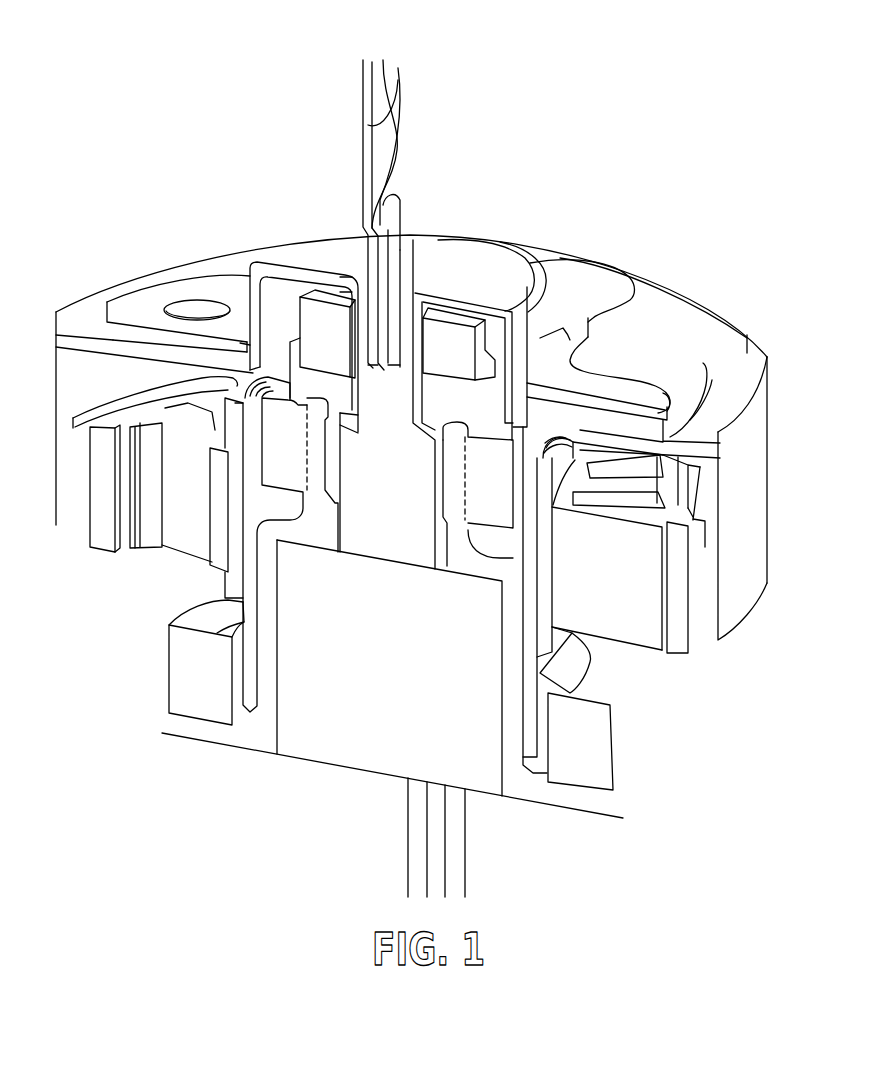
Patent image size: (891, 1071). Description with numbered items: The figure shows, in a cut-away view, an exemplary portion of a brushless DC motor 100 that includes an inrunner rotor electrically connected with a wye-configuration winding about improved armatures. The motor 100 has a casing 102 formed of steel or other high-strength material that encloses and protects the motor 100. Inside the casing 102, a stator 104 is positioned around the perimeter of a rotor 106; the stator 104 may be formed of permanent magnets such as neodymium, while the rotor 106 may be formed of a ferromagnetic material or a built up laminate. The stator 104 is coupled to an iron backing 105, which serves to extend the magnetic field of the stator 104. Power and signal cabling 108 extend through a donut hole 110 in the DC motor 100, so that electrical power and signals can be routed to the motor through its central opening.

The DC motor 100 is at (697, 185).
The casing 102 is at (737, 471).
The stator 104 is at (678, 620).
The iron backing 105 is at (697, 613).
The rotor 106 is at (617, 610).
The power and signal cabling 108 is at (397, 150).
The donut hole 110 is at (402, 603).